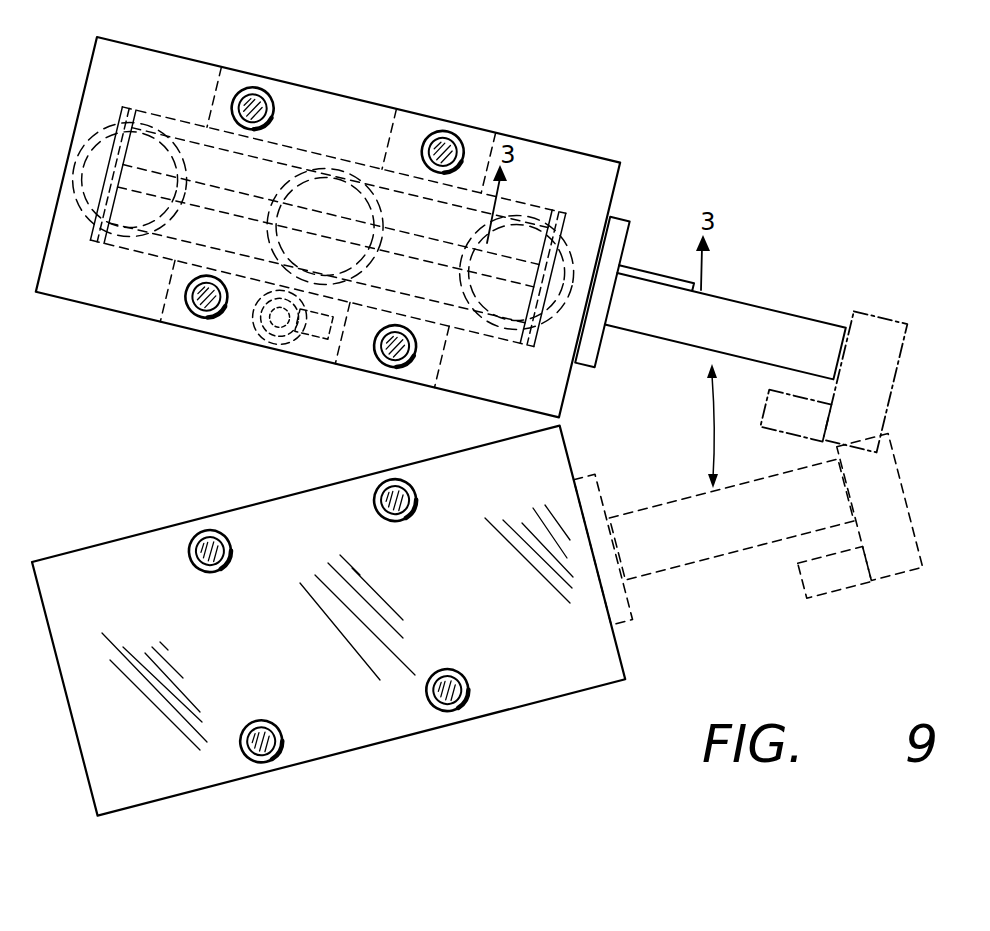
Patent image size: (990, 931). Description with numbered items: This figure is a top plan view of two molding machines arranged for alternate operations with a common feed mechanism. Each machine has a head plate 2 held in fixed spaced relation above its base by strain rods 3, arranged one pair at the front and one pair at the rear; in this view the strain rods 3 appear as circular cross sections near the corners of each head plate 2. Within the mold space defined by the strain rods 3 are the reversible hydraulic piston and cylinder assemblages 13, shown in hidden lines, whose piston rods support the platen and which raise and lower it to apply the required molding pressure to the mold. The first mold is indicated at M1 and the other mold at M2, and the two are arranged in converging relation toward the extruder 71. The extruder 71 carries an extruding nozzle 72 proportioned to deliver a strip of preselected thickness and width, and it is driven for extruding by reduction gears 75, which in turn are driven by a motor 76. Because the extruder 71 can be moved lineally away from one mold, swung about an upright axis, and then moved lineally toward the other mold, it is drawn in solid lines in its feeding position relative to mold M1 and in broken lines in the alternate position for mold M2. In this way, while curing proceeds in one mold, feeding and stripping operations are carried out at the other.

The head plate 2 is at (347, 426).
The strain rods 3 is at (258, 96).
The reversible hydraulic piston and cylinder assemblages 13 is at (188, 160).
The extruder 71 is at (686, 338).
The extruding nozzle 72 is at (603, 348).
The reduction gears 75 is at (898, 358).
The motor 76 is at (775, 430).
The first mold M1 is at (570, 380).
The second mold M2 is at (568, 458).